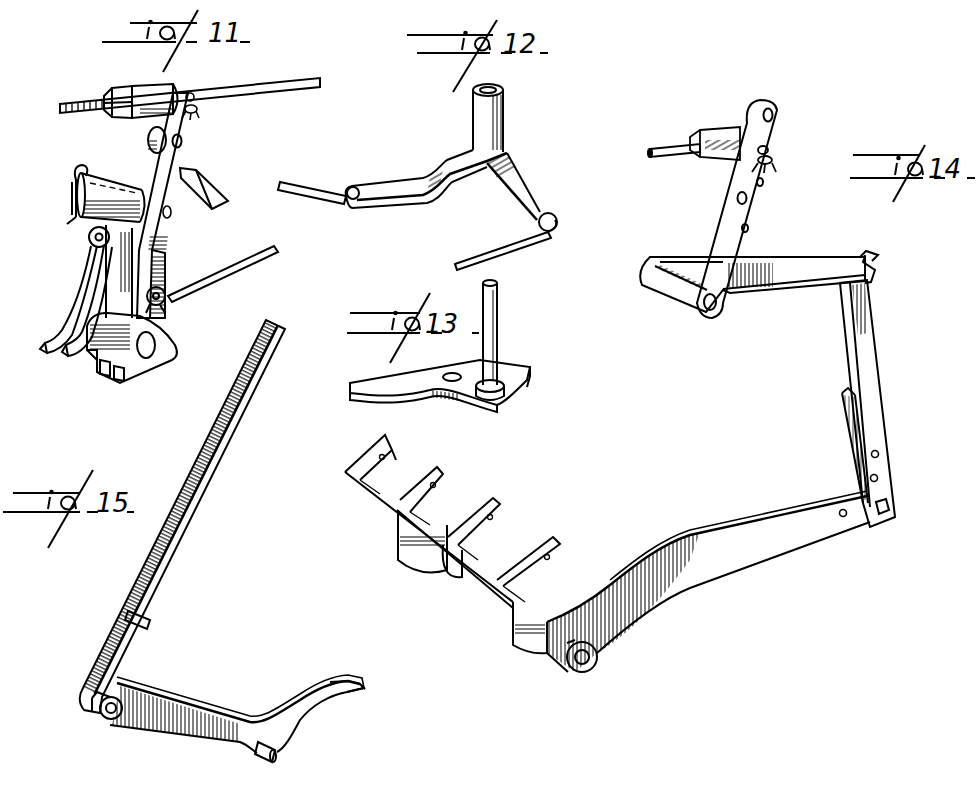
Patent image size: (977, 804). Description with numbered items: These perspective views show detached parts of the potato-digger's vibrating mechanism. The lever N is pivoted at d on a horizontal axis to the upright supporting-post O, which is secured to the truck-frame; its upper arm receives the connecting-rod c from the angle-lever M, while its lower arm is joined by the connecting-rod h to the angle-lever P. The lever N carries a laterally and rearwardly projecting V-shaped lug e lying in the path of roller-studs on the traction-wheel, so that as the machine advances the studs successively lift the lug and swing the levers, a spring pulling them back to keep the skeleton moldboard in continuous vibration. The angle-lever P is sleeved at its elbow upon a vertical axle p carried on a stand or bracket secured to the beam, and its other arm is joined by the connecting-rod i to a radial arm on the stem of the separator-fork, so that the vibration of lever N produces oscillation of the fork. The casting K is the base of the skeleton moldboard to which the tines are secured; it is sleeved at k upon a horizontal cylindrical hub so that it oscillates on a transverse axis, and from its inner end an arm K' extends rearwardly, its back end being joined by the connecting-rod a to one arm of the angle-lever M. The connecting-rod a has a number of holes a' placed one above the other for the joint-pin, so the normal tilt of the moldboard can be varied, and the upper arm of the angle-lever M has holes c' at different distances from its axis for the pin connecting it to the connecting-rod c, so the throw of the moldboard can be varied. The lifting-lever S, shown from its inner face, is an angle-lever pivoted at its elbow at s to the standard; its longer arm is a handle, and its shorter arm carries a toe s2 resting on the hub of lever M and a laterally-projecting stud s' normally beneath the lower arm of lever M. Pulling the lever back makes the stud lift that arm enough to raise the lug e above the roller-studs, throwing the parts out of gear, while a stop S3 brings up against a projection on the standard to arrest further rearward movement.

In FIG. 11, the connecting-rod c is at (190, 83).
In FIG. 14, the connecting-rod c is at (674, 167).
In FIG. 11, the lever N is at (192, 150).
In FIG. 11, the V-shaped lug e is at (208, 196).
In FIG. 11, the pivot d is at (172, 213).
In FIG. 11, the supporting-post O is at (117, 266).
In FIG. 11, the connecting-rod h is at (244, 262).
In FIG. 12, the connecting-rod h is at (510, 243).
In FIG. 12, the connecting-rod i is at (320, 192).
In FIG. 12, the angle-lever P is at (497, 178).
In FIG. 13, the vertical axle p is at (498, 352).
In FIG. 14, the holes c' is at (779, 152).
In FIG. 14, the angle-lever M is at (785, 258).
In FIG. 14, the connecting-rod a is at (873, 403).
In FIG. 14, the holes a' is at (886, 473).
In FIG. 14, the casting K is at (452, 521).
In FIG. 14, the arm K' is at (708, 581).
In FIG. 14, the sleeve k is at (452, 575).
In FIG. 15, the lifting-lever S is at (168, 573).
In FIG. 15, the stop S3 is at (150, 623).
In FIG. 15, the pivot s is at (107, 723).
In FIG. 15, the stud s' is at (289, 752).
In FIG. 15, the toe s2 is at (347, 690).